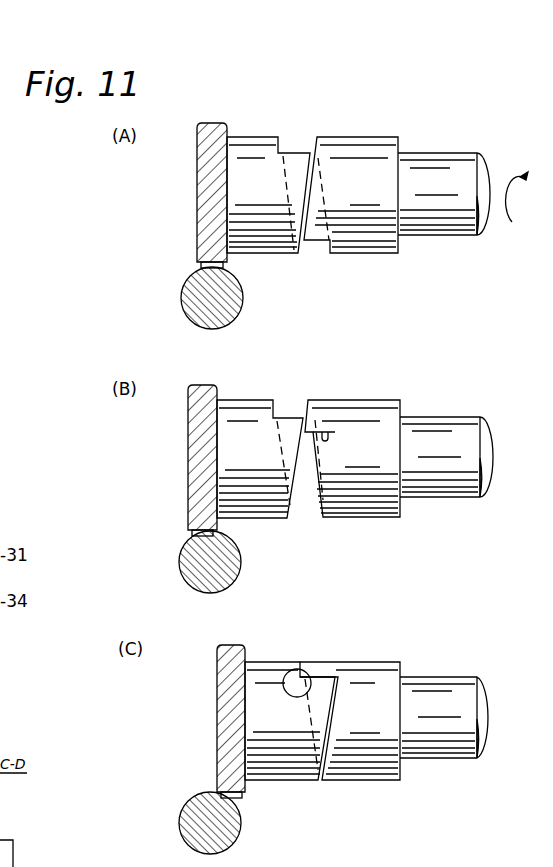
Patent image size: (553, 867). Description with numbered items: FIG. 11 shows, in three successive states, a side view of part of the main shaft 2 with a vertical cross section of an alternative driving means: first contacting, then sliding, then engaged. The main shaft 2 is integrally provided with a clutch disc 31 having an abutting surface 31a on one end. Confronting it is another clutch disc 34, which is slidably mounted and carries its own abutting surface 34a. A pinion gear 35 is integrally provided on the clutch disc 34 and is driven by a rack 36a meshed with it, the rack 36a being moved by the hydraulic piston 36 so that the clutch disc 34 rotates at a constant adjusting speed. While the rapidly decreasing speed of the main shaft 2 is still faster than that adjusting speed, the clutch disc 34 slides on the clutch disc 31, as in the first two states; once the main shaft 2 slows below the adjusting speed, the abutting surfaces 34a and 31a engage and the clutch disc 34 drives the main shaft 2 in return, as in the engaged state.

The main shaft 2 is at (440, 153).
The clutch disc 31 is at (361, 136).
The abutting surface 31a is at (312, 258).
The clutch disc 34 is at (250, 137).
The abutting surface 34a is at (307, 152).
The pinion gear 35 is at (196, 197).
The hydraulic piston 36 is at (244, 312).
The rack 36a is at (192, 275).